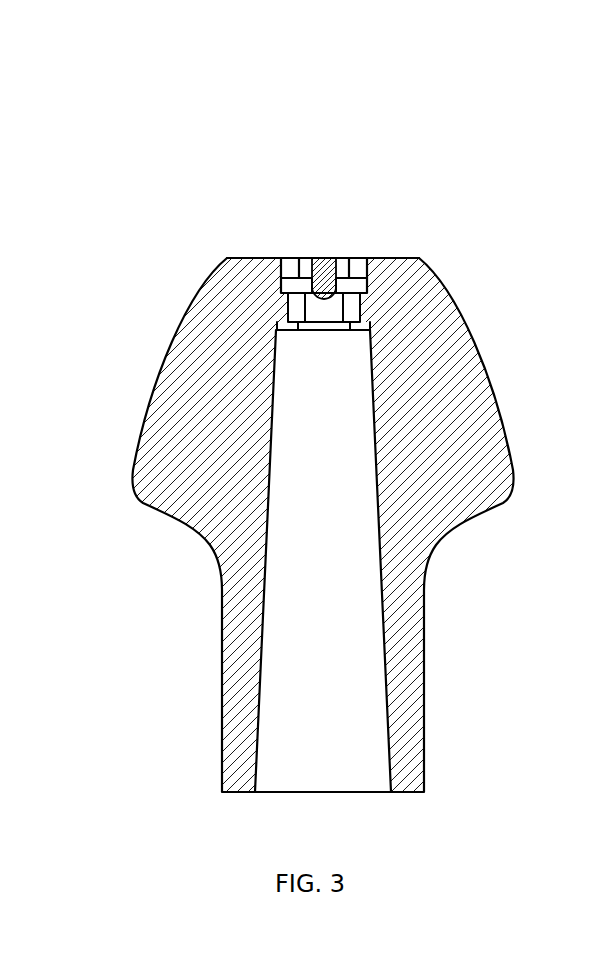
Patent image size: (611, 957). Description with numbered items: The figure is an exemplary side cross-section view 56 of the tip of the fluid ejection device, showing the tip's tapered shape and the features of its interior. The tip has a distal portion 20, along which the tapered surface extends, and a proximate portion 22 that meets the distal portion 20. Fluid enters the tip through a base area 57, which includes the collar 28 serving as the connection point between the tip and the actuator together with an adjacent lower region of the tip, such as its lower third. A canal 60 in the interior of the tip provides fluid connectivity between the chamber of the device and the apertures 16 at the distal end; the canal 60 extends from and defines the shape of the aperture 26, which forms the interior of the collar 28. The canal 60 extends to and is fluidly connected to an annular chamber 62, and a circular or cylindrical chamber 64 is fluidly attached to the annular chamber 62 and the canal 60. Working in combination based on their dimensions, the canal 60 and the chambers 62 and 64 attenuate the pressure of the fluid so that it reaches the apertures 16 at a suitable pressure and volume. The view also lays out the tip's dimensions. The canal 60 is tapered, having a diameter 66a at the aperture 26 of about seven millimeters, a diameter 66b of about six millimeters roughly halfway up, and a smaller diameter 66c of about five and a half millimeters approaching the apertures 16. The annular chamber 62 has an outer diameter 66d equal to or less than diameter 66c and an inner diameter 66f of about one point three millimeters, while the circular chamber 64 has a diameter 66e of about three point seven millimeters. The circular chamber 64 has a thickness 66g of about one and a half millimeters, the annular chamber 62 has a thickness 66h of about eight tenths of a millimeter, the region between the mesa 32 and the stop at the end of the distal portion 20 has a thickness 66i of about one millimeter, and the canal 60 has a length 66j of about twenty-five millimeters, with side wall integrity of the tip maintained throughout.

The side cross-section view 56 is at (92, 78).
The apertures 16 is at (281, 258).
The mesa 32 is at (195, 262).
The annular chamber 62 is at (281, 291).
The circular chamber 64 is at (288, 302).
The distal portion 20 is at (118, 265).
The proximate portion 22 is at (118, 510).
The base area 57 is at (208, 628).
The canal 60 is at (337, 683).
The aperture 26 is at (388, 784).
The collar 28 is at (535, 792).
The diameter 66a is at (391, 803).
The diameter 66b is at (382, 550).
The diameter 66c is at (373, 384).
The outer diameter 66d is at (368, 258).
The diameter 66e is at (360, 293).
The inner diameter 66f is at (336, 258).
The thickness 66g is at (367, 322).
The thickness 66h is at (367, 292).
The thickness 66i is at (419, 258).
The length 66j is at (535, 322).